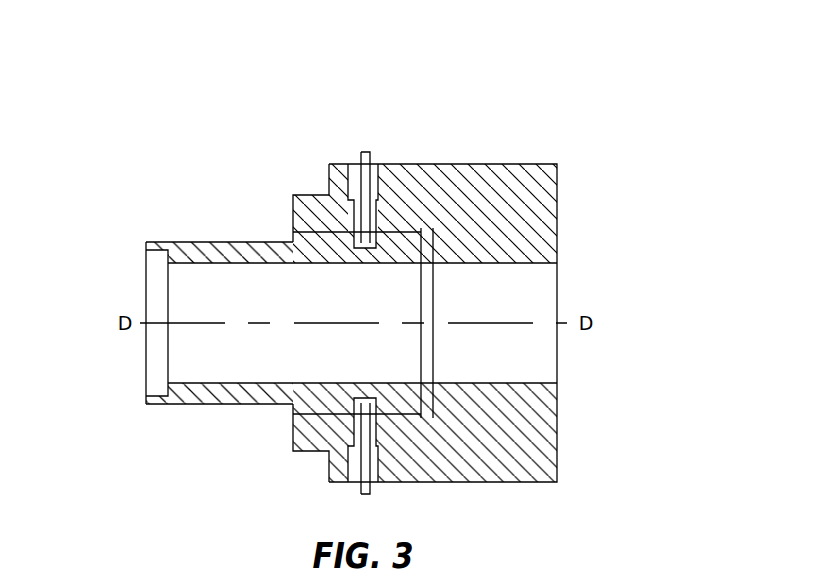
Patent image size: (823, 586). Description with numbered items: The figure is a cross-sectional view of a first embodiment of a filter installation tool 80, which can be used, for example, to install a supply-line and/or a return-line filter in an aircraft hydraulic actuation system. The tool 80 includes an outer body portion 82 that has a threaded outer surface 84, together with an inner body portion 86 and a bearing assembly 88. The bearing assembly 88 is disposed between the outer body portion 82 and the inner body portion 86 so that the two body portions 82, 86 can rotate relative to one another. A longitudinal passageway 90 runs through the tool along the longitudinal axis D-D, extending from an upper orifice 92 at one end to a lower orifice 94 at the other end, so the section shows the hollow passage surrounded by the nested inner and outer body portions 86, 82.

The filter installation tool 80 is at (367, 143).
The outer body portion 82 is at (560, 156).
The threaded outer surface 84 is at (297, 185).
The inner body portion 86 is at (149, 236).
The bearing assembly 88 is at (431, 216).
The longitudinal passageway 90 is at (463, 363).
The upper orifice 92 is at (131, 352).
The lower orifice 94 is at (571, 353).